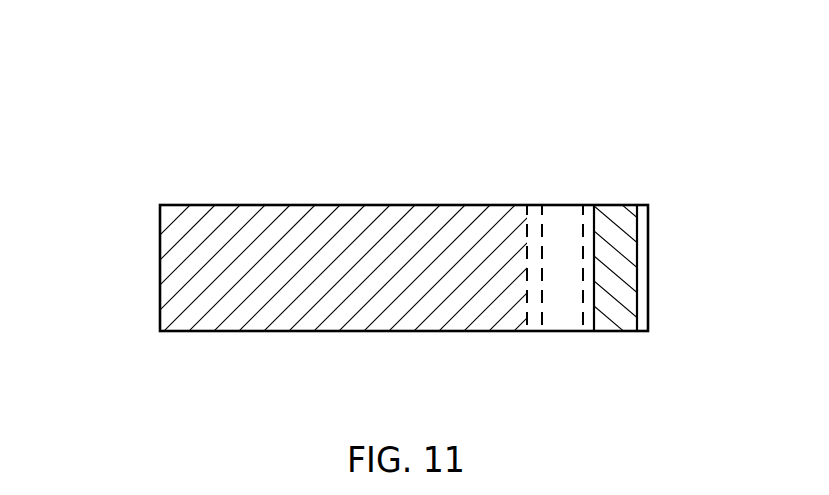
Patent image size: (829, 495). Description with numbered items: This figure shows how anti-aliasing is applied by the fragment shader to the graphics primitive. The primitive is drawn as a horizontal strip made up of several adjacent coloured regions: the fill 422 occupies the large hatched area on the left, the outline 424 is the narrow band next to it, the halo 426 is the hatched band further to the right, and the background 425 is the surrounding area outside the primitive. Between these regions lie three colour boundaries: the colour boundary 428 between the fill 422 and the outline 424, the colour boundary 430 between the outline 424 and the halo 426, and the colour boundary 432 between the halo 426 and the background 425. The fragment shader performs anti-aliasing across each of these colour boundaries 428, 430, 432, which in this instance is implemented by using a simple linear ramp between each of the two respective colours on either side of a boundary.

The fill 422 is at (176, 232).
The outline 424 is at (558, 227).
The background 425 is at (146, 147).
The halo 426 is at (617, 217).
The colour boundary 428 is at (531, 355).
The colour boundary 430 is at (590, 355).
The colour boundary 432 is at (671, 241).